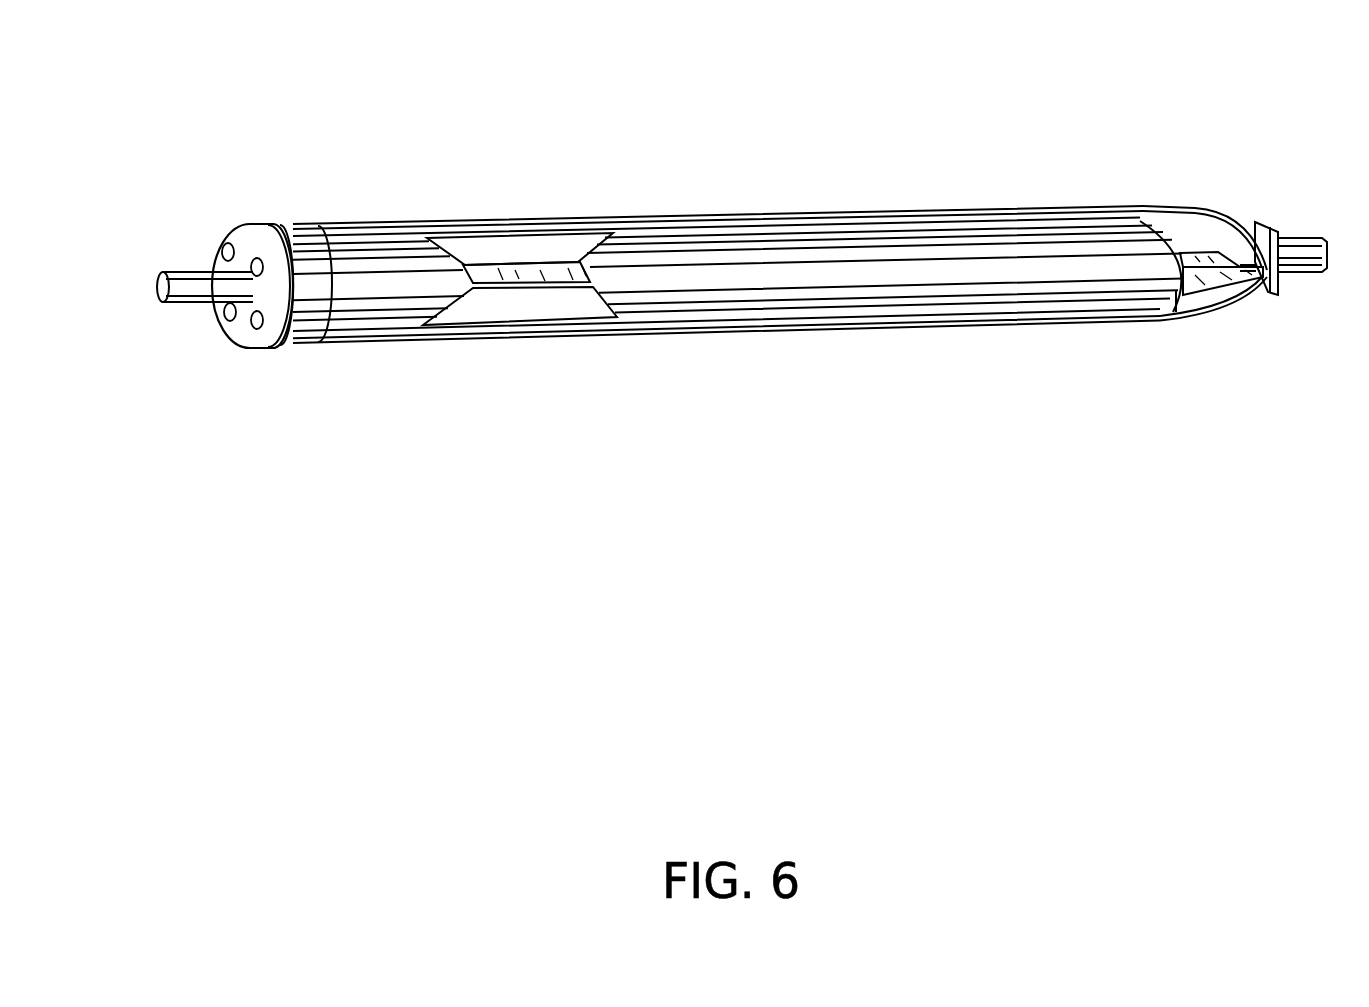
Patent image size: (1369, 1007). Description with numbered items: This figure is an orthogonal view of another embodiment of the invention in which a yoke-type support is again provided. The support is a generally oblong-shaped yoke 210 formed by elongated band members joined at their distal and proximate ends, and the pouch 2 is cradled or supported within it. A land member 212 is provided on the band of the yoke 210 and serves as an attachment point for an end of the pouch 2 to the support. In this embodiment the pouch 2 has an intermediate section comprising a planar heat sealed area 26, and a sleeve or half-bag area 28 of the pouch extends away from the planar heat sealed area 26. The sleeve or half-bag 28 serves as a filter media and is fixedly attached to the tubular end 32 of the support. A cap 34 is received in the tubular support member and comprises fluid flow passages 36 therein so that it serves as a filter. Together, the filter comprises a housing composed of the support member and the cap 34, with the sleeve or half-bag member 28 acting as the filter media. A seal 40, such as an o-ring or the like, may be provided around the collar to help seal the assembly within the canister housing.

The pouch 2 is at (893, 277).
The planar heat sealed area 26 is at (523, 268).
The sleeve or half-bag area 28 is at (318, 290).
The tubular end 32 is at (247, 223).
The cap 34 is at (233, 320).
The fluid flow passages 36 is at (223, 248).
The seal 40 is at (248, 222).
The yoke 210 is at (575, 220).
The land member 212 is at (1197, 292).